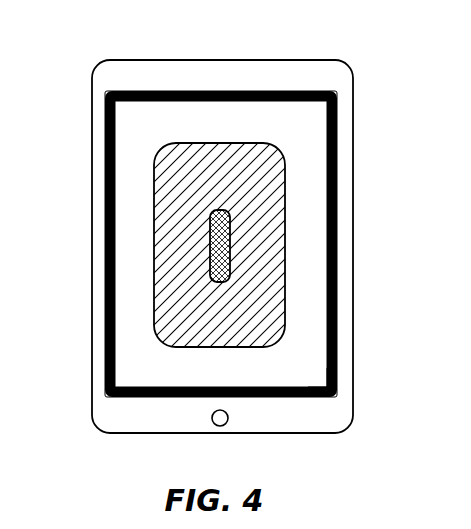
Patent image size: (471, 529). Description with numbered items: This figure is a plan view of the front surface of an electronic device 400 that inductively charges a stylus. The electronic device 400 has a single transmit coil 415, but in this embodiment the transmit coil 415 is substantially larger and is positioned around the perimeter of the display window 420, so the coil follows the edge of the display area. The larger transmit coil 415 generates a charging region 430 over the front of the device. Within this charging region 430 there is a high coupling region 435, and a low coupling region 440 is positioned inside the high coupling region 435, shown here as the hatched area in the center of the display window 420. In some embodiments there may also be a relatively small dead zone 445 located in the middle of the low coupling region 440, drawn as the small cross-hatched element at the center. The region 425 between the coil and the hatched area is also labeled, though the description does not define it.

The electronic device 400 is at (343, 44).
The housing 415 is at (338, 123).
The cover layer 420 is at (335, 92).
The display area 425 is at (308, 188).
The bezel corner 430 is at (333, 392).
The bezel frame 435 is at (312, 243).
The haptic actuator region 440 is at (224, 165).
The sensor element 445 is at (220, 238).